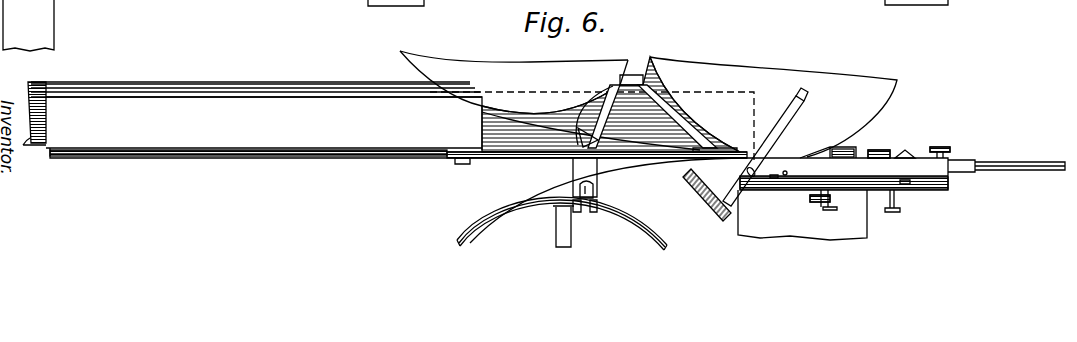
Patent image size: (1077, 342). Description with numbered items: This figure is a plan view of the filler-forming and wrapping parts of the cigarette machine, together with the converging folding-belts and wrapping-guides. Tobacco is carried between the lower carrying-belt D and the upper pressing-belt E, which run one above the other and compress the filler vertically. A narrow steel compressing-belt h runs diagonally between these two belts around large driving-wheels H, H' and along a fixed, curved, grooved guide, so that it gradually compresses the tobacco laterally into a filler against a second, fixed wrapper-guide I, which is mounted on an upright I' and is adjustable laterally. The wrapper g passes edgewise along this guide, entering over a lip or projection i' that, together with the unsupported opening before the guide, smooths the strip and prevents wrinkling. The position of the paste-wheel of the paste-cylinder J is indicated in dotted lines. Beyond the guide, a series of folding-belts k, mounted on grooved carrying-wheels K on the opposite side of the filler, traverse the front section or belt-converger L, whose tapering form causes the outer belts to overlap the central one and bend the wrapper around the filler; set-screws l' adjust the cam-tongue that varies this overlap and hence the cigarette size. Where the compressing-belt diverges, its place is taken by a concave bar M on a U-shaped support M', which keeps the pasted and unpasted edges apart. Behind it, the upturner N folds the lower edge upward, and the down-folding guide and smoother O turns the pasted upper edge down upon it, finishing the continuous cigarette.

The carrying-belt D is at (256, 85).
The pressing-belt E is at (252, 116).
The lower guide bar F' is at (248, 164).
The wrapper g is at (466, 160).
The lip or projection i' is at (484, 175).
The wrapper-guide I is at (597, 171).
The upright I' is at (575, 185).
The folding-belt k is at (614, 168).
The carrying-wheel K is at (562, 223).
The belt-converger L is at (681, 160).
The set-screws l' is at (861, 209).
The driving-wheel H is at (773, 107).
The driving-wheel H' is at (577, 105).
The compressing-belt h is at (822, 119).
The hatched web h' is at (516, 131).
The paste-cylinder J is at (658, 140).
The bar M is at (828, 142).
The support M' is at (878, 143).
The upturner N is at (908, 150).
The down-folding guide and smoother O is at (940, 142).